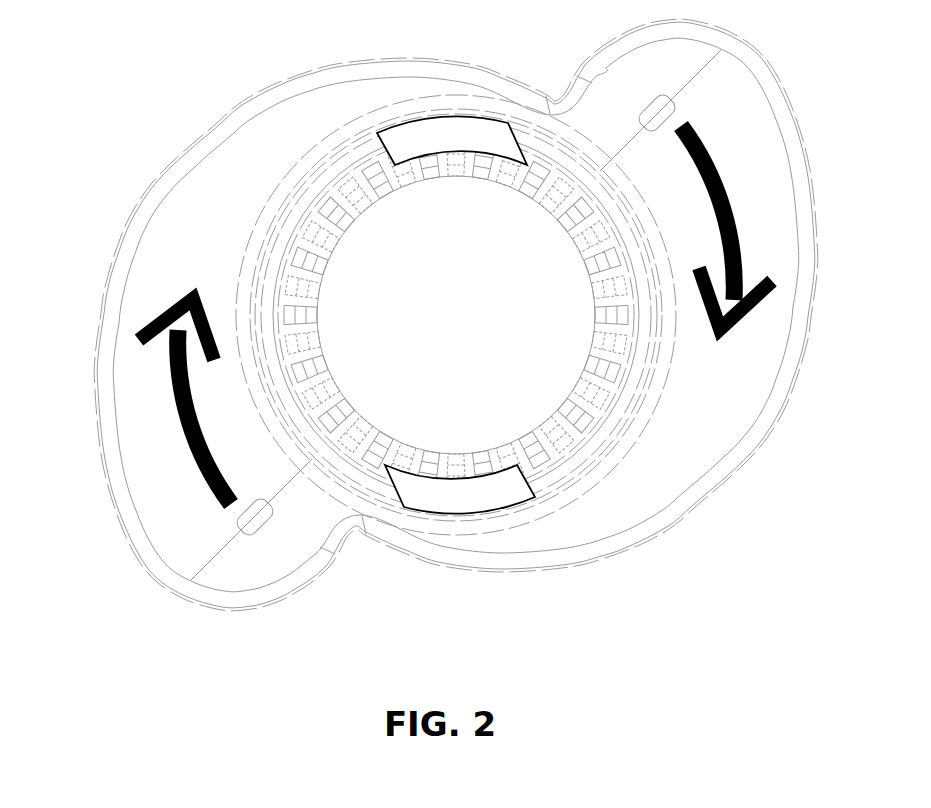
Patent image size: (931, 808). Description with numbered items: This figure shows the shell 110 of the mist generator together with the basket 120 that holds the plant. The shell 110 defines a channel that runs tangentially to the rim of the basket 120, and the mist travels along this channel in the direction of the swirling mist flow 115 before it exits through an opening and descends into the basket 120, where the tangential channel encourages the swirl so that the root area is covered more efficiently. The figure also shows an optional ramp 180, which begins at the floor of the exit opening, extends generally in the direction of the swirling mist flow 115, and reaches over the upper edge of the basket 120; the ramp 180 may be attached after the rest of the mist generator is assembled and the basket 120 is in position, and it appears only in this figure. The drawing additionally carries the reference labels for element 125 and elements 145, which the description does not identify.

The shell 110 is at (184, 154).
The swirling mist flow direction 115 is at (698, 128).
The basket 120 is at (342, 162).
The central opening 125 is at (463, 357).
The buttons 145 is at (657, 95).
The ramp 180 is at (438, 138).